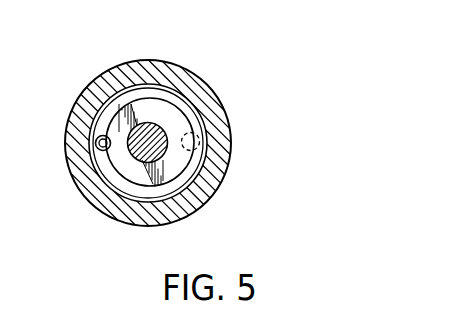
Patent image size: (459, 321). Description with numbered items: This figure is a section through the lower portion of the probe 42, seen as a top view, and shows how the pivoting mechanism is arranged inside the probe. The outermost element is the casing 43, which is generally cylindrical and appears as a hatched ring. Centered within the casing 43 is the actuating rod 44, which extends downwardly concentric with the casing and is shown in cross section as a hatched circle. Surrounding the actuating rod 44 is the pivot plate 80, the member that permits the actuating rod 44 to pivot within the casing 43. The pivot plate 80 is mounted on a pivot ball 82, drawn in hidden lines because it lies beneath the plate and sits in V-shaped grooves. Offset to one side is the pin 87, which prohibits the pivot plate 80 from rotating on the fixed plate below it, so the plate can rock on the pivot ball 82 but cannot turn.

The probe 42 is at (233, 137).
The casing 43 is at (212, 188).
The pivot plate 80 is at (181, 102).
The actuating rod 44 is at (152, 157).
The pin 87 is at (97, 147).
The pivot ball 82 is at (197, 144).